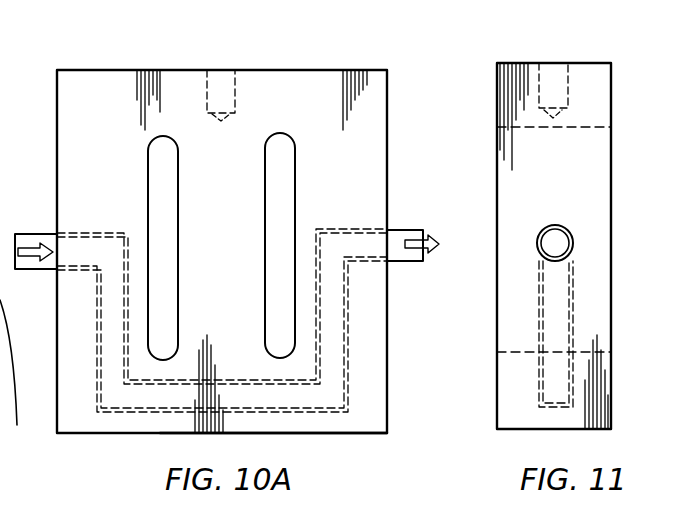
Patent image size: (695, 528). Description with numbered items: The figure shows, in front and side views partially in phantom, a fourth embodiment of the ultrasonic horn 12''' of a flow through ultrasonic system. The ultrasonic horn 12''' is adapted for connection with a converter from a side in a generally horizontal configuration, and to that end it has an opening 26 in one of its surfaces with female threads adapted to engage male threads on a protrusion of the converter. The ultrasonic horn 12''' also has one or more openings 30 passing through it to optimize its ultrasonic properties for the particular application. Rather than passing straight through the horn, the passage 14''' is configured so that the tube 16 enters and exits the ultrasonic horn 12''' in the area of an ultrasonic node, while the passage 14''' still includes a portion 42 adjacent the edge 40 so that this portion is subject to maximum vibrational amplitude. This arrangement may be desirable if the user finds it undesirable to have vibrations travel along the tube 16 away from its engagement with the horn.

In FIG. 10A, the ultrasonic horn 12''' is at (250, 251).
In FIG. 11, the ultrasonic horn 12''' is at (533, 246).
In FIG. 10A, the passage 14''' is at (250, 320).
In FIG. 11, the passage 14''' is at (602, 304).
In FIG. 10A, the tube 16 is at (408, 263).
In FIG. 10A, the opening 26 is at (228, 82).
In FIG. 11, the opening 26 is at (562, 70).
In FIG. 10A, the opening 30 is at (294, 138).
In FIG. 10A, the edge 40 is at (343, 434).
In FIG. 10A, the portion 42 is at (142, 413).